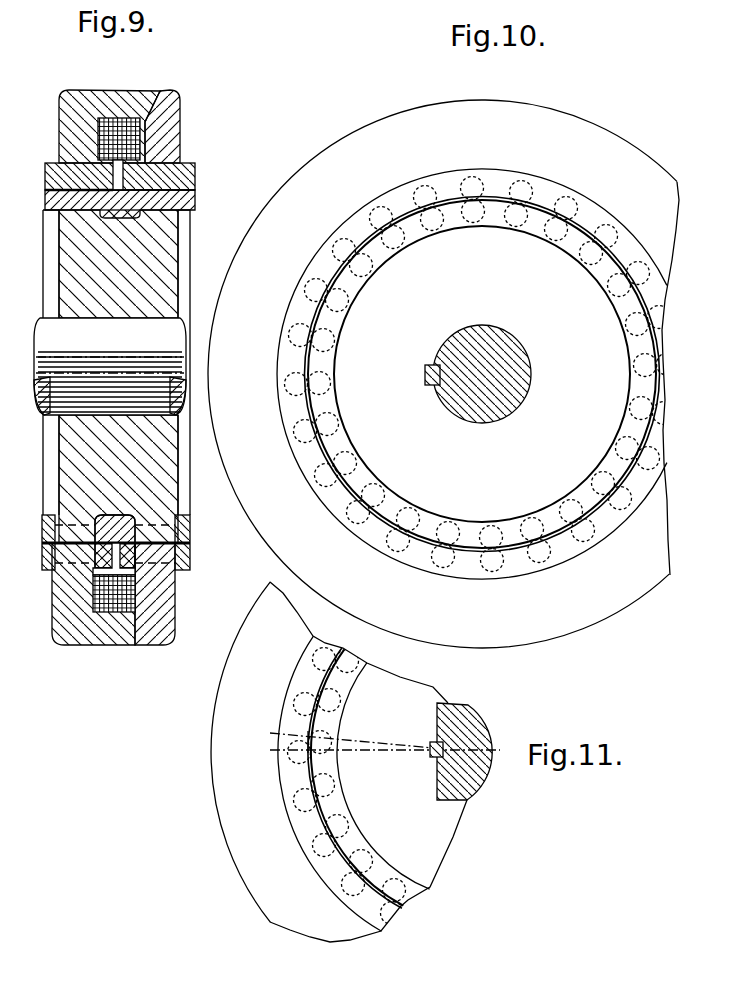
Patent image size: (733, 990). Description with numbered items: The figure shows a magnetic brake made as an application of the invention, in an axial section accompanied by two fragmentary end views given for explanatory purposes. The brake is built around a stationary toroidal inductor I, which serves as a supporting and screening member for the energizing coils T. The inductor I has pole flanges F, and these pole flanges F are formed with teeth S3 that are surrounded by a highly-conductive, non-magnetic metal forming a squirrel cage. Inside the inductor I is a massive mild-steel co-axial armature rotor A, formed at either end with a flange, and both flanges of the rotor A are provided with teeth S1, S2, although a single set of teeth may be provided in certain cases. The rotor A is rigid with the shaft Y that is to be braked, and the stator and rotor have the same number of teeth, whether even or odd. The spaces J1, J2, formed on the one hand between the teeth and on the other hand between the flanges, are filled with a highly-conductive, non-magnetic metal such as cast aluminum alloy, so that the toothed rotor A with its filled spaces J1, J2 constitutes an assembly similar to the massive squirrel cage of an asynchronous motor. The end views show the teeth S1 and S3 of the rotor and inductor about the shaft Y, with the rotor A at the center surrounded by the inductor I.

In FIG. 9, the stationary toroidal inductor I is at (96, 98).
In FIG. 10, the stationary toroidal inductor I is at (443, 374).
In FIG. 11, the stationary toroidal inductor I is at (339, 762).
In FIG. 9, the energizing coils T is at (160, 92).
In FIG. 9, the pole flanges F is at (172, 134).
In FIG. 9, the teeth S1 is at (68, 193).
In FIG. 10, the teeth S1 is at (383, 503).
In FIG. 11, the teeth S1 is at (377, 861).
In FIG. 9, the teeth S2 is at (175, 203).
In FIG. 9, the teeth S3 is at (183, 183).
In FIG. 10, the teeth S3 is at (357, 527).
In FIG. 11, the teeth S3 is at (348, 892).
In FIG. 9, the shaft Y is at (168, 324).
In FIG. 10, the shaft Y is at (523, 378).
In FIG. 11, the shaft Y is at (478, 775).
In FIG. 9, the armature rotor A is at (108, 305).
In FIG. 10, the armature rotor A is at (482, 374).
In FIG. 11, the armature rotor A is at (385, 776).
In FIG. 9, the spaces J1 is at (54, 571).
In FIG. 9, the spaces J2 is at (173, 577).